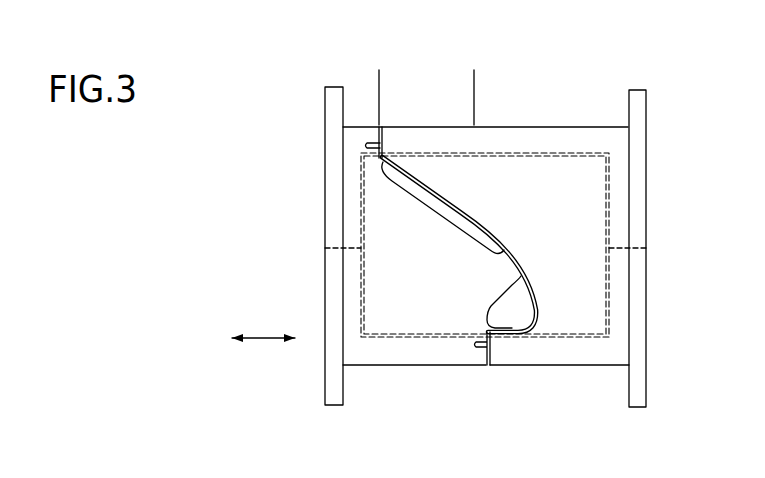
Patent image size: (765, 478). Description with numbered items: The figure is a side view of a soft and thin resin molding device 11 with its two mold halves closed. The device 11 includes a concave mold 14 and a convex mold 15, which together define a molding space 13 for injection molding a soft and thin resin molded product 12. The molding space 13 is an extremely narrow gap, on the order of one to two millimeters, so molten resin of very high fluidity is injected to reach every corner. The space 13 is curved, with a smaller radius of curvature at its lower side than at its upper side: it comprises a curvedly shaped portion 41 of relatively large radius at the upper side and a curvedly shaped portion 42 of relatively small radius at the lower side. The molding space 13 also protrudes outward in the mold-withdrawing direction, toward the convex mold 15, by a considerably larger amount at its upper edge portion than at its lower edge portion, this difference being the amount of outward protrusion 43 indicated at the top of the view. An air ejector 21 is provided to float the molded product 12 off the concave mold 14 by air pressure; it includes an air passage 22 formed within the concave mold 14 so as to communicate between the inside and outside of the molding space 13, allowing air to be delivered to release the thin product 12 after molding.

The soft and thin resin molding device 11 is at (511, 97).
The soft and thin resin molded product 12 is at (482, 221).
The molding space 13 is at (515, 250).
The concave mold 14 is at (596, 388).
The convex mold 15 is at (384, 384).
The air ejector 21 is at (485, 300).
The air passage 22 is at (428, 338).
The curvedly shaped portion 41 is at (438, 214).
The curvedly shaped portion 42 is at (498, 296).
The amount of outward protrusion 43 is at (474, 78).